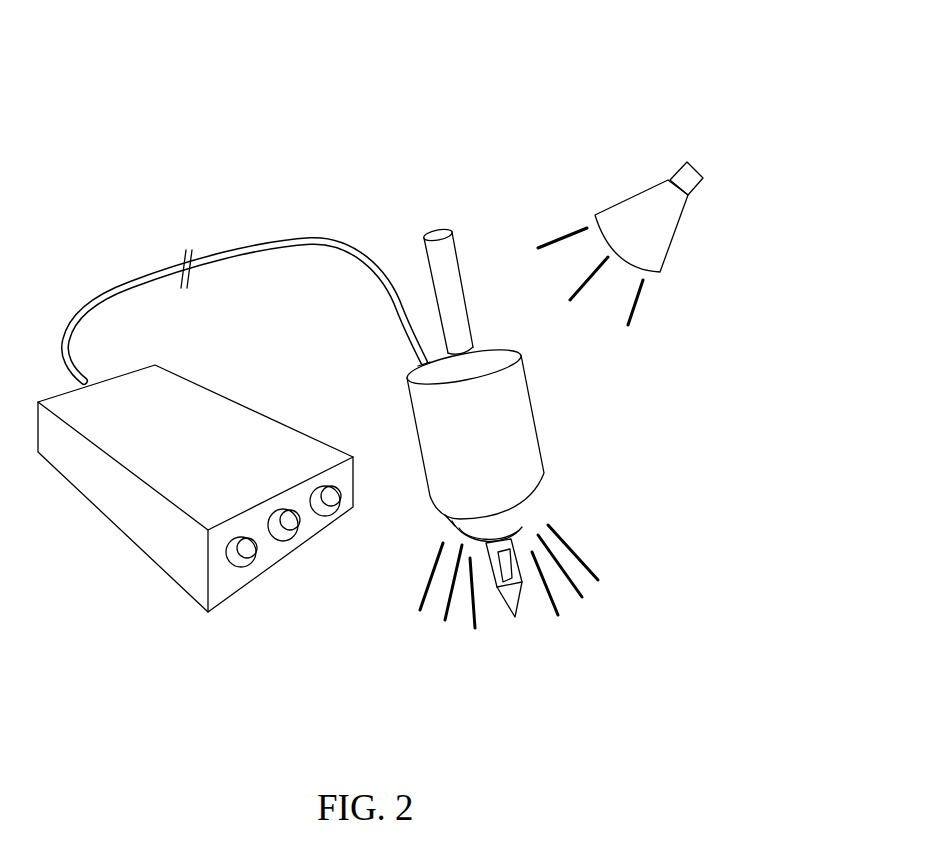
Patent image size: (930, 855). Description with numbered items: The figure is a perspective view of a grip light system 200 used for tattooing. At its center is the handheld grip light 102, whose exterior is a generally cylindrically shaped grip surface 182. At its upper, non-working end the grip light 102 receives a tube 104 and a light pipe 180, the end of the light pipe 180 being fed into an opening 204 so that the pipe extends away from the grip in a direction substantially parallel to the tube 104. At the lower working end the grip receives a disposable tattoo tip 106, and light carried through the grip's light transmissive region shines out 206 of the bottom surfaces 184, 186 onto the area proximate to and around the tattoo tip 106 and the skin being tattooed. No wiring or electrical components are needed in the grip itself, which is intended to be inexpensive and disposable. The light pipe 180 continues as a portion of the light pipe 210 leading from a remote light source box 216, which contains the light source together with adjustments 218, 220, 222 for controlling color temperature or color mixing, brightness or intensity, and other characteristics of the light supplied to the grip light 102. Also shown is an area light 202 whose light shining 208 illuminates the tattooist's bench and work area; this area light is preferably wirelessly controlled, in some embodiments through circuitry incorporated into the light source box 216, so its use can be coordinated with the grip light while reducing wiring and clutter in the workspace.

The grip light system 200 is at (499, 124).
The grip light 102 is at (550, 431).
The tube 104 is at (462, 260).
The tattoo tip 106 is at (505, 602).
The light pipe 180 is at (358, 240).
The grip surface 182 is at (542, 452).
The bottom surface 184 is at (535, 505).
The bottom surface 186 is at (457, 525).
The area light 202 is at (637, 195).
The opening 204 is at (417, 362).
The light shining out 206 is at (472, 598).
The light shining 208 is at (633, 312).
The portion of the light pipe 210 is at (128, 282).
The light source box 216 is at (140, 550).
The adjustment 218 is at (238, 568).
The adjustment 220 is at (287, 542).
The adjustment 222 is at (327, 517).